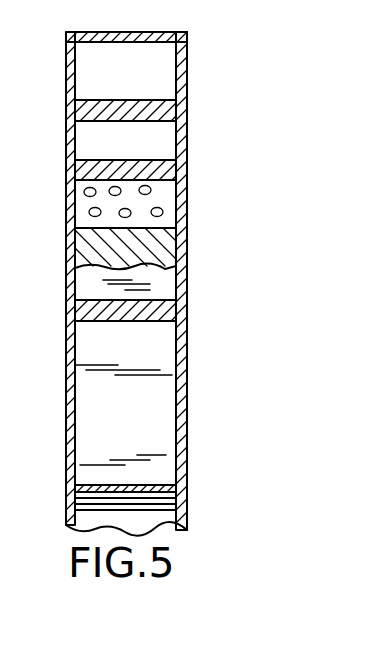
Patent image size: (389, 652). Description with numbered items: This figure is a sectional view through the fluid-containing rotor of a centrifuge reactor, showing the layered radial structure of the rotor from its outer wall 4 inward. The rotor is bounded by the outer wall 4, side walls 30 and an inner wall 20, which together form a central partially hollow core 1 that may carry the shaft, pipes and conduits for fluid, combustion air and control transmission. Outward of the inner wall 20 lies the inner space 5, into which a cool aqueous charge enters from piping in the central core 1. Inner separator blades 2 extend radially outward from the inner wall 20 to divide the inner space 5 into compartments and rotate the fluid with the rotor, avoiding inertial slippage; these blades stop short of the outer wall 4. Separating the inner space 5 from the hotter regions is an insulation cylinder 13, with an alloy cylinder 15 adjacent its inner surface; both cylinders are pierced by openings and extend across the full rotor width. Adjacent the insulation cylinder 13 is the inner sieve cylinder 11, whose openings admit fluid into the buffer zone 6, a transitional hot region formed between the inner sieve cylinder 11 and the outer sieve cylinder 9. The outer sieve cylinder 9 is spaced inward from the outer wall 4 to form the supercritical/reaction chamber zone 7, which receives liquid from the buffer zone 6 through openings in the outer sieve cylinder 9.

The outer wall 4 is at (122, 33).
The supercritical/reaction chamber zone 7 is at (150, 68).
The outer sieve cylinder 9 is at (150, 101).
The buffer zone 6 is at (155, 141).
The inner sieve cylinder 11 is at (177, 185).
The insulation cylinder 13 is at (157, 185).
The side walls 30 is at (66, 216).
The inner separator blades 2 is at (160, 250).
The alloy cylinder 15 is at (160, 312).
The inner space 5 is at (150, 400).
The inner wall 20 is at (150, 484).
The central partially hollow core 1 is at (187, 512).